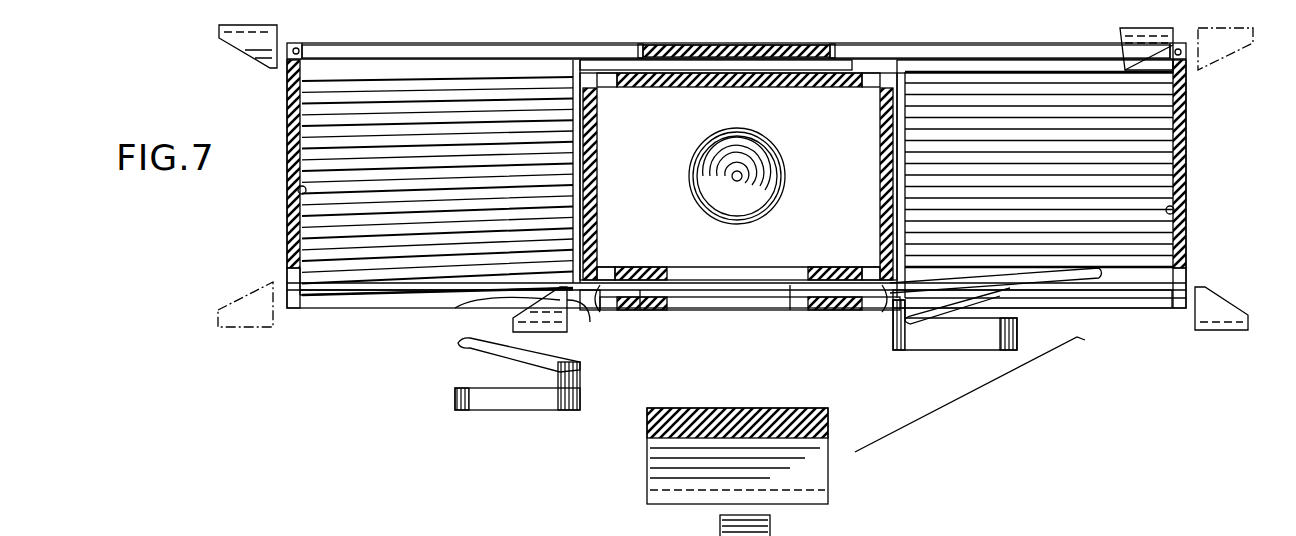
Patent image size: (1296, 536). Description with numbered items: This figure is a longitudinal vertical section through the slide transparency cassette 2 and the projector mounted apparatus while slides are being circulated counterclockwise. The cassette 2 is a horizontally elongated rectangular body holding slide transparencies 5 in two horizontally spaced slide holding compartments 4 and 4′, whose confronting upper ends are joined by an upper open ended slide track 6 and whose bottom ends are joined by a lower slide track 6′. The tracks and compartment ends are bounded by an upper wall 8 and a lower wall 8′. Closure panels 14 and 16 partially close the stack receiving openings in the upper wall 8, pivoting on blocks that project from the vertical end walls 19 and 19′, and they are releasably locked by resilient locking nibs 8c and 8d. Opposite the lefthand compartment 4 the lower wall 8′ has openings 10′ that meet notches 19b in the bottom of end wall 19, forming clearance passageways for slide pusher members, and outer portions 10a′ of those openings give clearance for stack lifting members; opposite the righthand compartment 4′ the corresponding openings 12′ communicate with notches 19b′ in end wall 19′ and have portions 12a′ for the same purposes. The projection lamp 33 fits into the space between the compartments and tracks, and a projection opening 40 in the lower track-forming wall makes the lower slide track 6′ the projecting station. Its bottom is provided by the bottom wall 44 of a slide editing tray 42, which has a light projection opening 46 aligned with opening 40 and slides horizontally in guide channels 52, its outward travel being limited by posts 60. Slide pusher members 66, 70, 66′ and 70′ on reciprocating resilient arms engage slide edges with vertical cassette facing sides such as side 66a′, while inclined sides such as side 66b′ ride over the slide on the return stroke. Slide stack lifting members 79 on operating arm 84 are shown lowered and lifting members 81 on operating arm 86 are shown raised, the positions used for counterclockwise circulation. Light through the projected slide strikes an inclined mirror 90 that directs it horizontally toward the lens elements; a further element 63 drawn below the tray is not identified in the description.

The slide transparency cassette 2 is at (352, 42).
The closure panel 14 is at (450, 48).
The closure panel 16 is at (1030, 50).
The vertical end wall 19 is at (287, 158).
The notch 19b is at (290, 272).
The vertical end wall 19′ is at (1186, 170).
The notch 19b′ is at (1186, 270).
The slide holding compartment 4 is at (300, 192).
The slide holding compartment 4′ is at (1176, 210).
The slide transparencies 5 is at (350, 90).
The upper slide track 6 is at (795, 60).
The lower slide track 6′ is at (792, 298).
The upper wall 8 is at (700, 46).
The resilient locking nib 8c is at (638, 50).
The resilient locking nib 8d is at (840, 48).
The lower wall 8′ is at (340, 304).
The opening 10′ is at (312, 304).
The outer opening portion 10a′ is at (528, 535).
The opening 12′ is at (1098, 306).
The opening portion 12a′ is at (1000, 535).
The projection lamp 33 is at (775, 150).
The projection opening 40 is at (800, 272).
The slide editing tray 42 is at (705, 302).
The bottom wall of slide editing tray 44 is at (600, 337).
The light projection opening 46 is at (643, 312).
The guide channels 52 is at (603, 290).
The post 60 is at (607, 535).
The bottom block 63 is at (772, 526).
The slide pusher member 66 is at (236, 48).
The slide pusher member 66′ is at (216, 316).
The cassette facing side 66a′ is at (592, 322).
The inclined side 66b′ is at (470, 303).
The slide pusher member 70 is at (1117, 30).
The slide pusher member 70′ is at (1230, 56).
The slide stack lifting member 79 is at (470, 344).
The slide stack lifting member 81 is at (985, 298).
The operating arm 84 is at (472, 398).
The operating arm 86 is at (975, 342).
The inclined mirror 90 is at (832, 434).